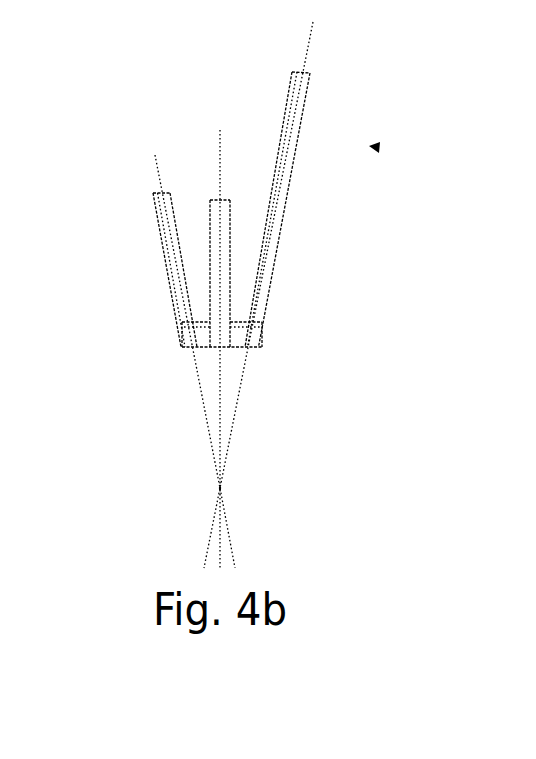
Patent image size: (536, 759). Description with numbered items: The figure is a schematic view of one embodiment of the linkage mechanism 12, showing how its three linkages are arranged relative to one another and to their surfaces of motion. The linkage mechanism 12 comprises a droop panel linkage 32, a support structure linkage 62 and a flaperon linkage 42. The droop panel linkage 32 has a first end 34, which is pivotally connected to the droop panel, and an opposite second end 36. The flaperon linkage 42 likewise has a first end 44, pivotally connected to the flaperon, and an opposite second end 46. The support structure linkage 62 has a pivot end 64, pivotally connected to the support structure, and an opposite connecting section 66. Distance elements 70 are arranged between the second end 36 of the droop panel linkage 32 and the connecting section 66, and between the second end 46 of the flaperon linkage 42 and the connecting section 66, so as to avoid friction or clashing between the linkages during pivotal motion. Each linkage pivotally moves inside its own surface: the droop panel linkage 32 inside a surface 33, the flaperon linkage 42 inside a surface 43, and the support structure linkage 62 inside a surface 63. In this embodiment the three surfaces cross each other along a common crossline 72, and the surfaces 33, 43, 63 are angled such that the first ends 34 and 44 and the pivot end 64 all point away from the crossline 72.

The linkage mechanism 12 is at (377, 148).
The droop panel linkage 32 is at (160, 237).
The surface 33 is at (153, 161).
The first end 34 is at (155, 197).
The second end 36 is at (182, 347).
The flaperon linkage 42 is at (291, 178).
The surface 43 is at (315, 38).
The first end 44 is at (310, 76).
The second end 46 is at (262, 326).
The support structure linkage 62 is at (210, 270).
The surface 63 is at (220, 130).
The pivot end 64 is at (225, 200).
The connecting section 66 is at (199, 348).
The distance elements 70 is at (186, 330).
The crossline 72 is at (221, 490).